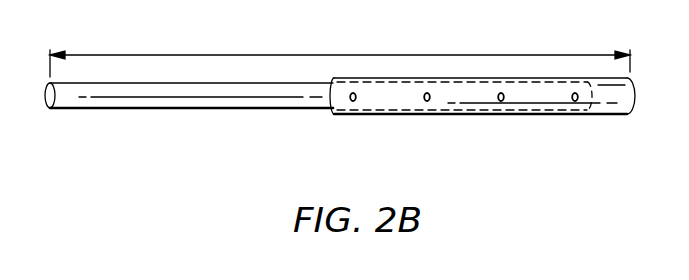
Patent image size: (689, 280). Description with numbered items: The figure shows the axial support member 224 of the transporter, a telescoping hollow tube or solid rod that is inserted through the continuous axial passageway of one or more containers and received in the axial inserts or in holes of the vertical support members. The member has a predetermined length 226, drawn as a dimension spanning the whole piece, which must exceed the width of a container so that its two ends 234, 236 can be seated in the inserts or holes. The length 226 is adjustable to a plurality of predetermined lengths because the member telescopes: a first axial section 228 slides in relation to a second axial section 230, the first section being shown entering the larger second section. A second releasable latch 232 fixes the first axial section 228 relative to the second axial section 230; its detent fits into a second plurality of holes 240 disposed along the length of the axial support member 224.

The axial support member 224 is at (493, 145).
The predetermined length 226 is at (338, 54).
The first axial section 228 is at (179, 110).
The second axial section 230 is at (481, 115).
The second releasable latch 232 is at (372, 122).
The end of the axial support member 234 is at (53, 110).
The end of the axial support member 236 is at (624, 115).
The second plurality of holes 240 is at (429, 101).